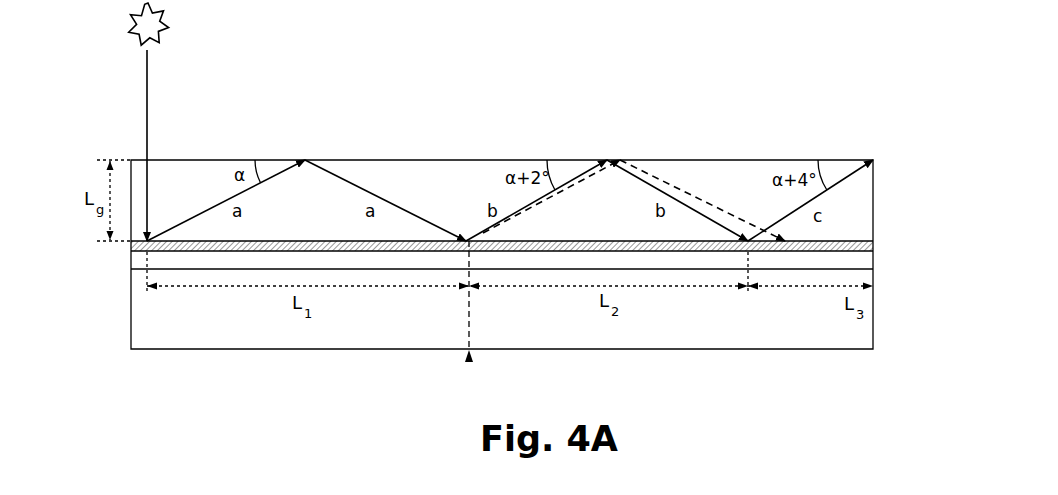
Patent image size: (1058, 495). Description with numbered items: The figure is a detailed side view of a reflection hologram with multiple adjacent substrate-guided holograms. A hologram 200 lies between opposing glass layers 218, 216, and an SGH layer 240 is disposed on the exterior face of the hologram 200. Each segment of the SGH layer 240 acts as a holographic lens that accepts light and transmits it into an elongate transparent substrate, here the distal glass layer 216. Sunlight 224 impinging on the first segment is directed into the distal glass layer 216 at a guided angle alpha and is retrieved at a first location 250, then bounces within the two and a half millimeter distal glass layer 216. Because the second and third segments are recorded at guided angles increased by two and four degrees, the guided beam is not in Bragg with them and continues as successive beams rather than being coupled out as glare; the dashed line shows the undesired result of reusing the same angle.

The sunlight 224 is at (147, 101).
The distal glass layer 216 is at (422, 177).
The hologram 200 is at (874, 258).
The SGH layer 240 is at (131, 246).
The glass layer 218 is at (874, 330).
The first location 250 is at (148, 240).